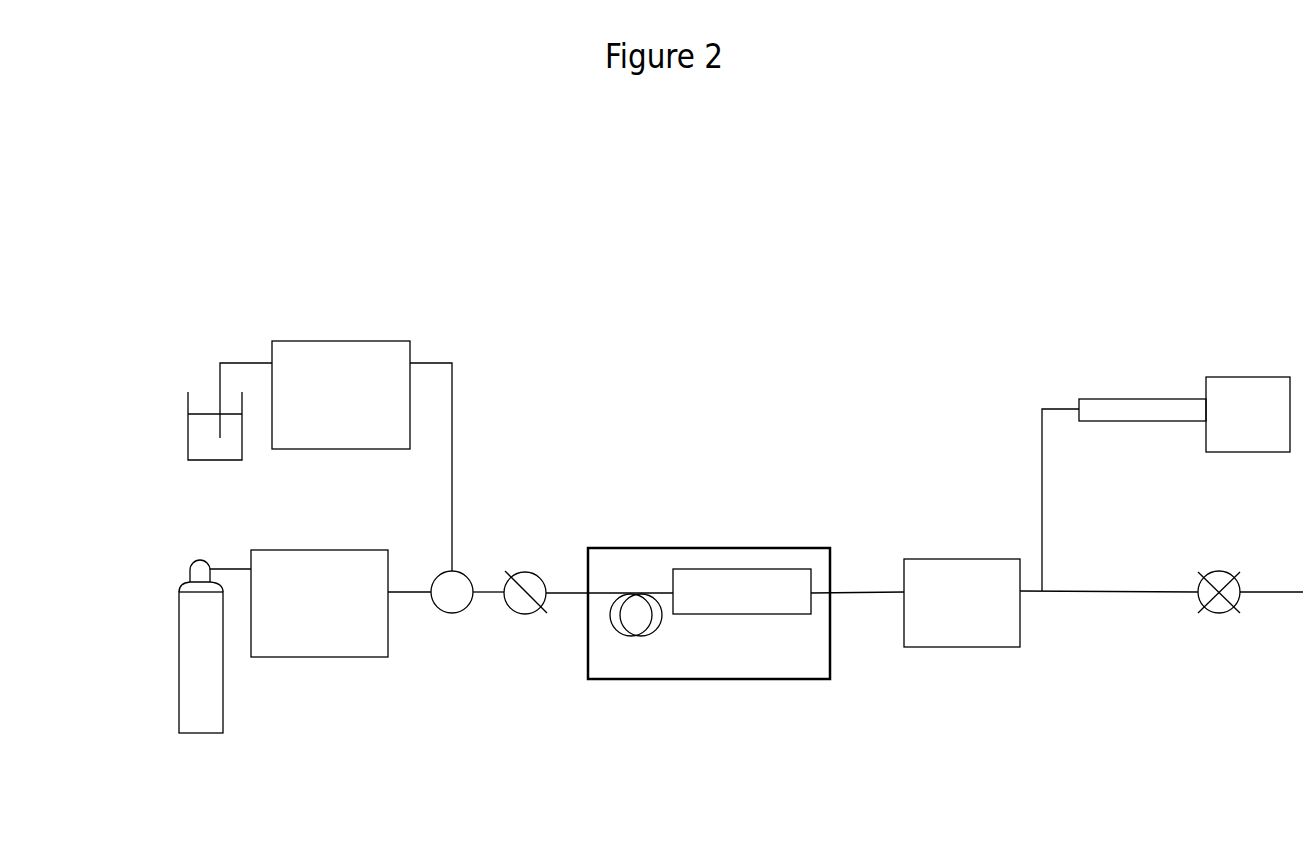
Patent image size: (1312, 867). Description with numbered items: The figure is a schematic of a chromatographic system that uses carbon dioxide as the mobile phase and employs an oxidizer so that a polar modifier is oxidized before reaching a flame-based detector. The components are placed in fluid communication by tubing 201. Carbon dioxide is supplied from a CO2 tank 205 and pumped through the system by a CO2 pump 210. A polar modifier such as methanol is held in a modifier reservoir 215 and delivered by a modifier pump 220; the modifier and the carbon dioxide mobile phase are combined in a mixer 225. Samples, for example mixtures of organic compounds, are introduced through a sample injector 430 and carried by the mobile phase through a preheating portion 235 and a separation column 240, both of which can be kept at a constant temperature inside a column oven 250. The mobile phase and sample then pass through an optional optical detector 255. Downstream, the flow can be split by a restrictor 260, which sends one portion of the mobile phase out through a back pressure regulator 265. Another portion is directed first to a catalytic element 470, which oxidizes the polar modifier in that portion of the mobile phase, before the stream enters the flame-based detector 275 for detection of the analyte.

The tubing 201 is at (452, 414).
The CO2 tank 205 is at (200, 680).
The CO2 pump 210 is at (341, 603).
The modifier reservoir 215 is at (200, 438).
The modifier pump 220 is at (341, 395).
The mixer 225 is at (452, 595).
The sample injector 430 is at (525, 590).
The preheating portion 235 is at (620, 635).
The separation column 240 is at (742, 591).
The column oven 250 is at (742, 680).
The optical detector 255 is at (1051, 603).
The restrictor 260 is at (1043, 536).
The catalytic element 470 is at (1108, 410).
The flame-based detector 275 is at (1248, 414).
The back pressure regulator 265 is at (1219, 613).